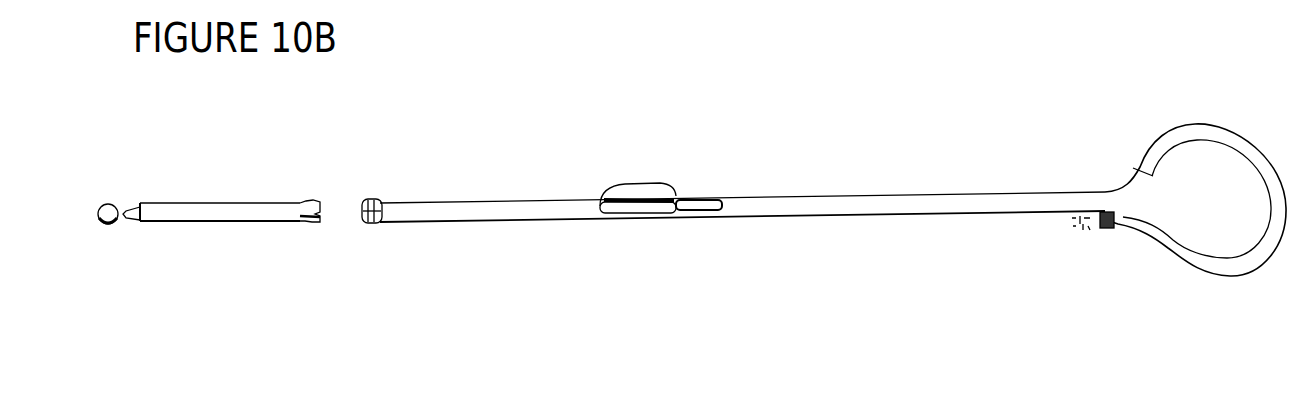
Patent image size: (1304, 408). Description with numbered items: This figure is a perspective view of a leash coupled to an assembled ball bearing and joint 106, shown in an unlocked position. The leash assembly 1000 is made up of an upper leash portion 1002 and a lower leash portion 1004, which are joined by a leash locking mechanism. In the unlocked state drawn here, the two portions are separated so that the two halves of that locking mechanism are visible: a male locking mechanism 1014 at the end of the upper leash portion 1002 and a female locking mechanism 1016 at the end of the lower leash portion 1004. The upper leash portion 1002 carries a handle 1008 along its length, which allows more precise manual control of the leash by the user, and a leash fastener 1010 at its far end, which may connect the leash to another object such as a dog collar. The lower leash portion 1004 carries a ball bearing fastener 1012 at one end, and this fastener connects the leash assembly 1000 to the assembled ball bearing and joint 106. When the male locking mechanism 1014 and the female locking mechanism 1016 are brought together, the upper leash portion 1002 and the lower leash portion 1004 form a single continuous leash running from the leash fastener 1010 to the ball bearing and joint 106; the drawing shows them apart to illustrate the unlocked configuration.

The leash assembly 1000 is at (968, 114).
The upper leash portion 1002 is at (542, 210).
The lower leash portion 1004 is at (225, 213).
The handle 1008 is at (647, 185).
The leash fastener 1010 is at (1072, 228).
The ball bearing fastener 1012 is at (142, 207).
The male locking mechanism 1014 is at (388, 210).
The female locking mechanism 1016 is at (315, 222).
The assembled ball bearing and joint 106 is at (103, 206).